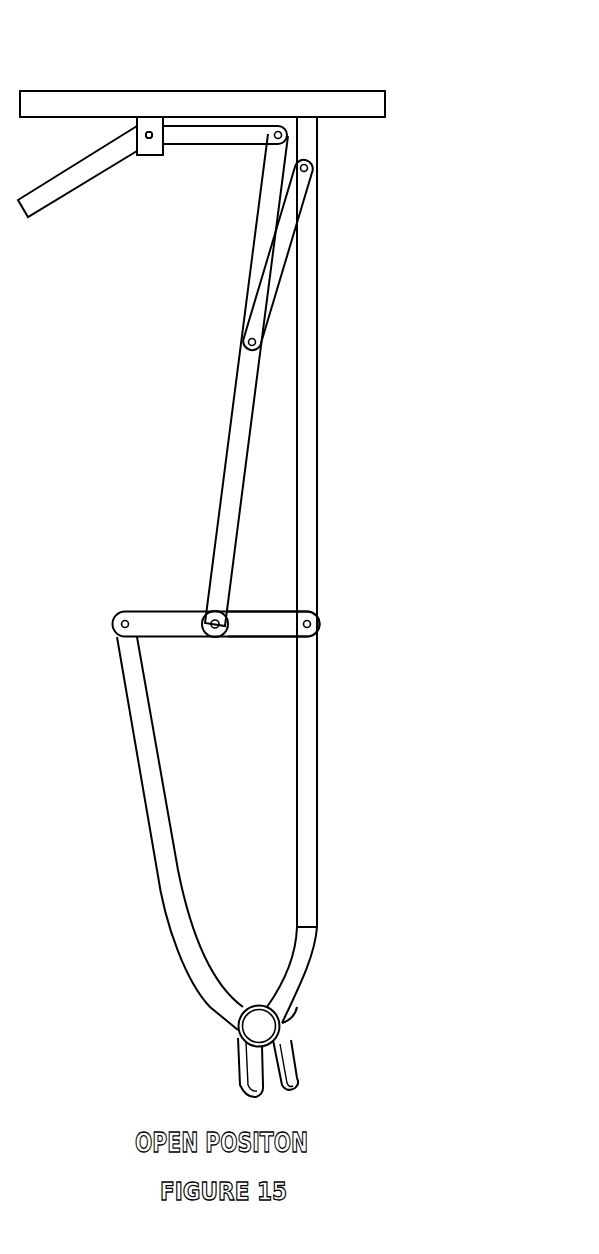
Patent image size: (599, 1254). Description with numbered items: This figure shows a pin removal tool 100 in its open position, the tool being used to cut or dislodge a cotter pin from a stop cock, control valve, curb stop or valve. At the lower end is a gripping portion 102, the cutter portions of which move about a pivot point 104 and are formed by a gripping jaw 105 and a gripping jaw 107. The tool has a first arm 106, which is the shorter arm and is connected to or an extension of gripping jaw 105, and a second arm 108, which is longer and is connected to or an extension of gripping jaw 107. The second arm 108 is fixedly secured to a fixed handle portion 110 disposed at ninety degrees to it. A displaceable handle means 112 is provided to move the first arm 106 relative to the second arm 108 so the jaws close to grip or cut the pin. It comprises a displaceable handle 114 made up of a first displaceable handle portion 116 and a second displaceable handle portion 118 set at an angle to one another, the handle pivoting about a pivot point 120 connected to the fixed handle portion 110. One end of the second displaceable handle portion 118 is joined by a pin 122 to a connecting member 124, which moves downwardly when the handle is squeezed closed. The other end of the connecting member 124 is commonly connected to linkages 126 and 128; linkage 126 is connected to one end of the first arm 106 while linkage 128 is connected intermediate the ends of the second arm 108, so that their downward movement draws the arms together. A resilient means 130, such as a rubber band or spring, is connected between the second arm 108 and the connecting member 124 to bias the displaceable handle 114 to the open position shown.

The pin removal tool 100 is at (314, 436).
The gripping portion 102 is at (295, 1038).
The pivot point 104 is at (298, 1006).
The gripping jaw 105 is at (298, 1062).
The first arm 106 is at (171, 846).
The gripping jaw 107 is at (234, 1055).
The second arm 108 is at (307, 843).
The fixed handle portion 110 is at (40, 96).
The displaceable handle means 112 is at (241, 175).
The displaceable handle 114 is at (138, 164).
The first displaceable handle portion 116 is at (30, 222).
The second displaceable handle portion 118 is at (211, 136).
The pivot point 120 is at (143, 119).
The pin 122 is at (288, 116).
The connecting member 124 is at (233, 455).
The linkage 126 is at (165, 620).
The linkage 128 is at (265, 620).
The resilient means 130 is at (318, 232).